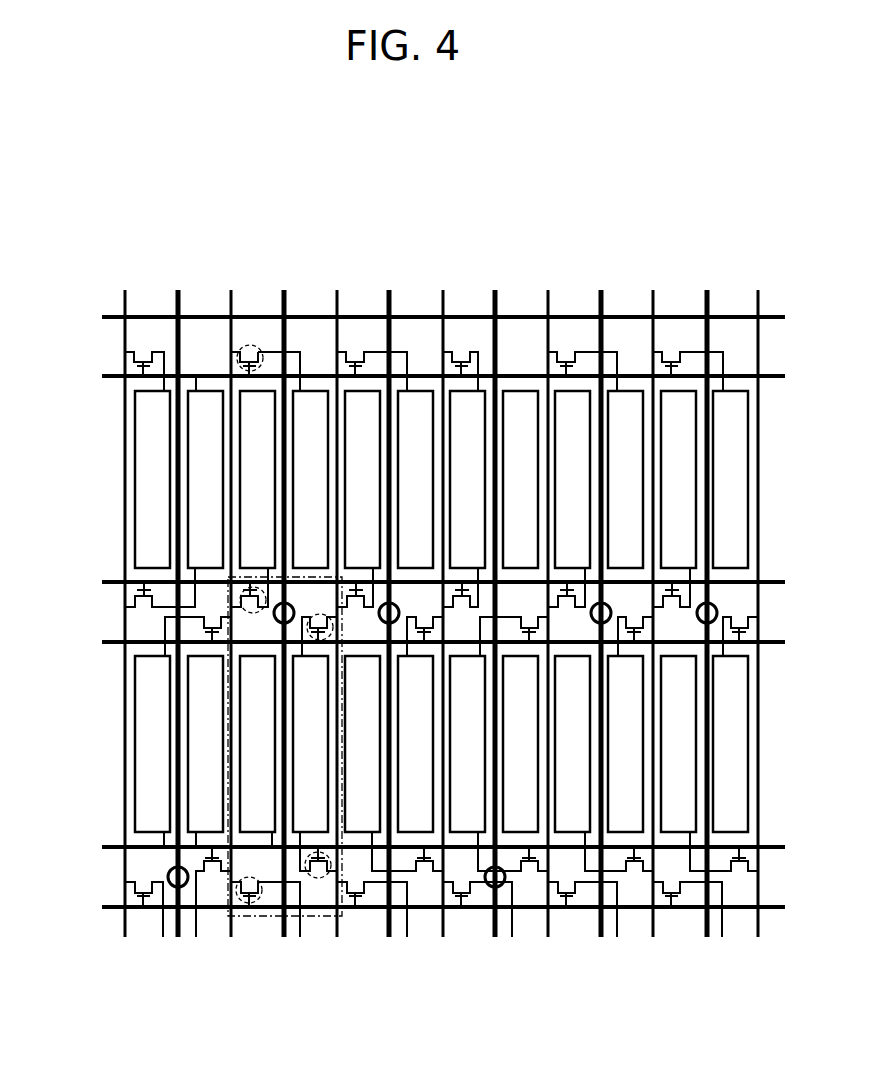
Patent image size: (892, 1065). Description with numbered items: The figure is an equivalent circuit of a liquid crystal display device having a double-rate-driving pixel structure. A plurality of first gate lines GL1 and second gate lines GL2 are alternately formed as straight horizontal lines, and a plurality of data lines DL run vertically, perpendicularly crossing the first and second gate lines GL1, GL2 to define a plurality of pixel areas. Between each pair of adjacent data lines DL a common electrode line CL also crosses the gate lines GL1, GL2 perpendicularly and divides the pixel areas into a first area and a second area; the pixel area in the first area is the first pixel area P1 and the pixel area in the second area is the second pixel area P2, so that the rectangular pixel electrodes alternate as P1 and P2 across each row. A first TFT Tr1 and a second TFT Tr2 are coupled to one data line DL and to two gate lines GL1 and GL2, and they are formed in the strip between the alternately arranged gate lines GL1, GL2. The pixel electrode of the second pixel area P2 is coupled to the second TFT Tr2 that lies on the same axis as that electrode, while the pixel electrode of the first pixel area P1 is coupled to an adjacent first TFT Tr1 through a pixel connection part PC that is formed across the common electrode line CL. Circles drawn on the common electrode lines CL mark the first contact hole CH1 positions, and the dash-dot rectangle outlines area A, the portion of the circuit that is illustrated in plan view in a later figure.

The data line DL is at (125, 290).
The common electrode line CL is at (178, 290).
The first gate line GL1 is at (102, 317).
The second gate line GL2 is at (102, 376).
The first pixel area P1 is at (441, 611).
The second pixel area P2 is at (441, 611).
The first TFT Tr1 is at (257, 347).
The second TFT Tr2 is at (240, 600).
The pixel connection part PC is at (276, 352).
The first contact hole CH1 is at (184, 887).
The area A is at (346, 920).